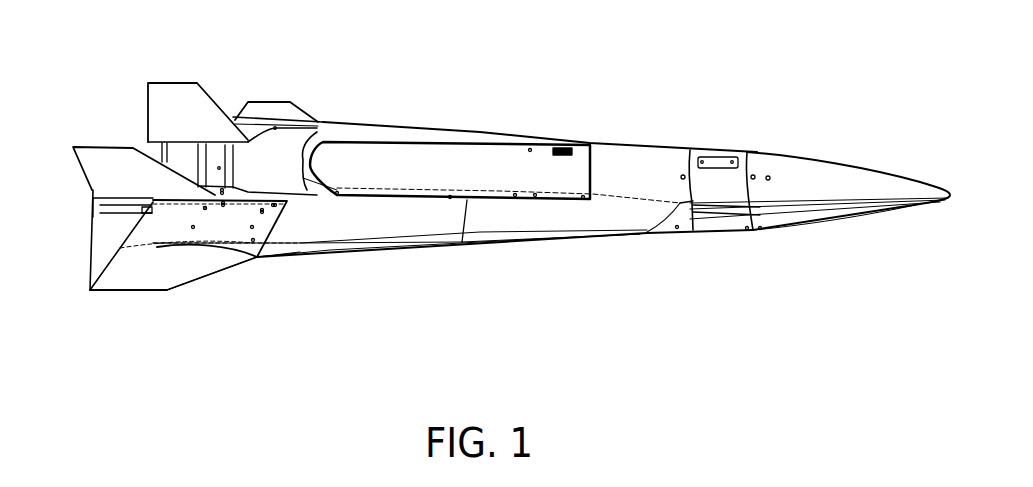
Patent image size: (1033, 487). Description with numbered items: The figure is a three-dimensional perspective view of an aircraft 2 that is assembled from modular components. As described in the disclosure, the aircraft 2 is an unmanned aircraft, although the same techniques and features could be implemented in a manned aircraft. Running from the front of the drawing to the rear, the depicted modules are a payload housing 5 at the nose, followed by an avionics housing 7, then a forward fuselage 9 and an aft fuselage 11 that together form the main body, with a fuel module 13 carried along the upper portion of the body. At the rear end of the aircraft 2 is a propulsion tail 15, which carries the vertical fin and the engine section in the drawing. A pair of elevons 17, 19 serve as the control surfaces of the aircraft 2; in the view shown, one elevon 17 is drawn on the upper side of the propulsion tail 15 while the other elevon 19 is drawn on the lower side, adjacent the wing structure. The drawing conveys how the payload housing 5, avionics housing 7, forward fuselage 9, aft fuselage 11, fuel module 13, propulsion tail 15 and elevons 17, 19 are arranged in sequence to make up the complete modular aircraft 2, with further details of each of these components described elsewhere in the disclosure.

The aircraft 2 is at (843, 67).
The payload housing 5 is at (833, 180).
The avionics housing 7 is at (708, 178).
The forward fuselage 9 is at (540, 218).
The aft fuselage 11 is at (360, 223).
The fuel module 13 is at (430, 163).
The propulsion tail 15 is at (130, 130).
The elevon 17 is at (272, 107).
The elevon 19 is at (173, 278).